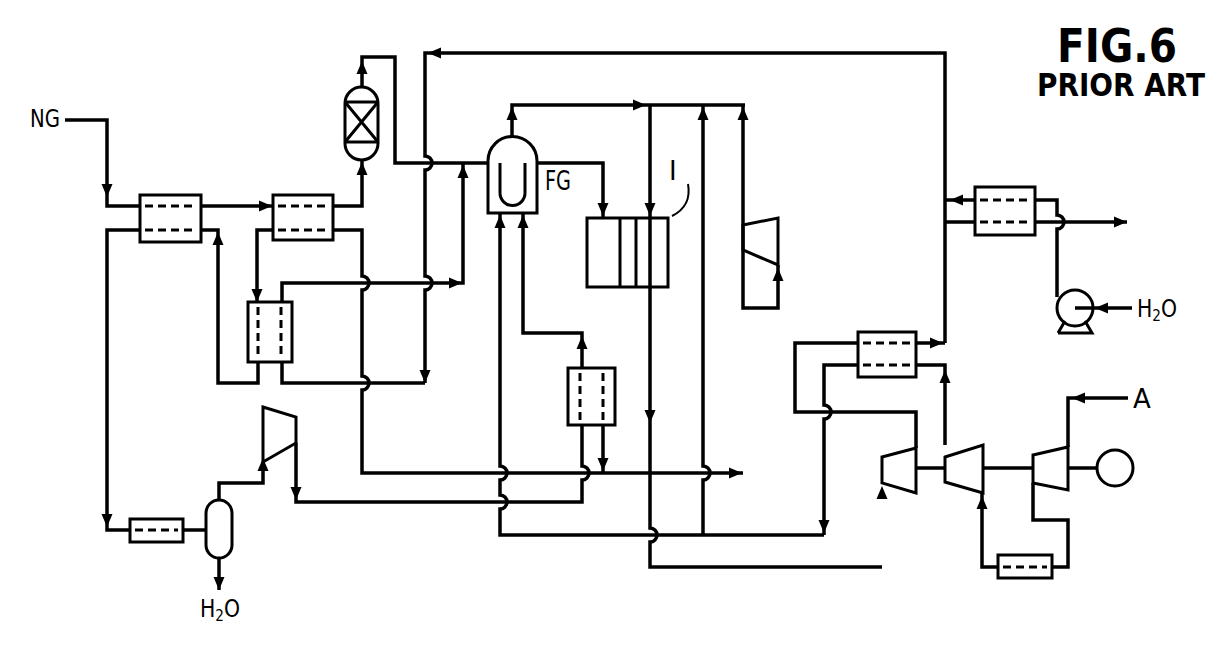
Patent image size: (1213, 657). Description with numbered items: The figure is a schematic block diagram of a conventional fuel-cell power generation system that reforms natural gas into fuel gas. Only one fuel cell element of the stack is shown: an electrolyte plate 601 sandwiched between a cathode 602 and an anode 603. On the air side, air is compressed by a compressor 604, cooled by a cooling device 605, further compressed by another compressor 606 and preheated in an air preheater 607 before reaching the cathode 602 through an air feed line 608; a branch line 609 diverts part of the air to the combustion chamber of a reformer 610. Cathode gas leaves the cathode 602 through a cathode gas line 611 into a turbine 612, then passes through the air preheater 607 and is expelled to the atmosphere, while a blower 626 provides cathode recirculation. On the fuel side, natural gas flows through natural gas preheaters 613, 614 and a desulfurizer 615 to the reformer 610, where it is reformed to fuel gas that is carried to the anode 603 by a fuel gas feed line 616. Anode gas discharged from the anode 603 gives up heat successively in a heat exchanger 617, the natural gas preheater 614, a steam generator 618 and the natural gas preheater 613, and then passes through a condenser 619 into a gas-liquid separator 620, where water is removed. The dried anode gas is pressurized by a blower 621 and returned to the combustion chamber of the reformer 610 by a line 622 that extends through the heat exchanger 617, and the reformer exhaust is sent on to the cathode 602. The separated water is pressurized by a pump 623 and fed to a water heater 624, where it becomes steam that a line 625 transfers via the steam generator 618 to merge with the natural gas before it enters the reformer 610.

The electrolyte plate 601 is at (629, 216).
The cathode 602 is at (663, 280).
The anode 603 is at (602, 276).
The compressor 604 is at (1062, 482).
The cooling device 605 is at (1010, 578).
The compressor 606 is at (973, 458).
The air preheater 607 is at (893, 331).
The air feed line 608 is at (705, 342).
The branch line 609 is at (518, 537).
The reformer 610 is at (495, 142).
The cathode gas line 611 is at (742, 568).
The turbine 612 is at (902, 480).
The natural gas preheater 613 is at (203, 178).
The natural gas preheater 614 is at (322, 180).
The desulfurizer 615 is at (345, 122).
The fuel gas feed line 616 is at (594, 137).
The heat exchanger 617 is at (568, 415).
The steam generator 618 is at (293, 349).
The condenser 619 is at (178, 500).
The gas-liquid separator 620 is at (232, 545).
The blower 621 is at (276, 430).
The line 622 is at (362, 502).
The pump 623 is at (1057, 315).
The water heater 624 is at (1035, 172).
The line 625 is at (712, 52).
The blower 626 is at (765, 236).